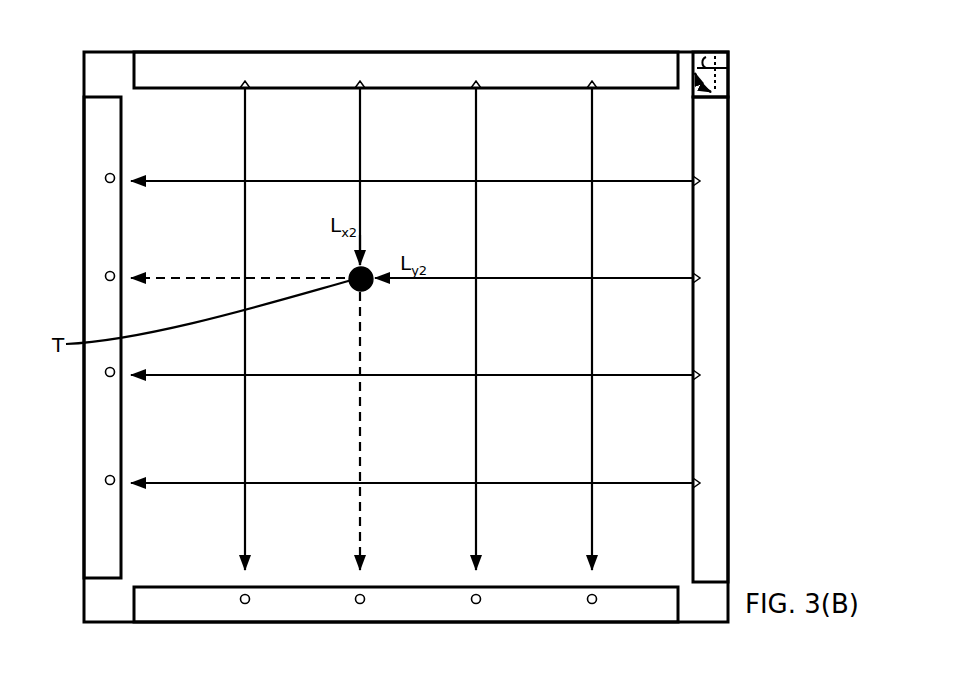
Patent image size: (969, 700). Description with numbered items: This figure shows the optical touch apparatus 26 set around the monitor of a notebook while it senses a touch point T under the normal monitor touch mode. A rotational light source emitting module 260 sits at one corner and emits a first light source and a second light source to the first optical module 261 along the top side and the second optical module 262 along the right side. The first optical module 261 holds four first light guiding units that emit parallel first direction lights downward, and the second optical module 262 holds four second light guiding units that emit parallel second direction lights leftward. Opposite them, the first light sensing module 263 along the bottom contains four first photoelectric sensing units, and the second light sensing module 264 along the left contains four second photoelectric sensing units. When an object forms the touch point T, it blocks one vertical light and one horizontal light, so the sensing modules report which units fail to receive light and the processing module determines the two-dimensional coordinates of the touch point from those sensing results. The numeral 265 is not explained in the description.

The optical touch apparatus 26 is at (526, 33).
The rotational light source emitting module 260 is at (706, 54).
The first optical module 261 is at (400, 60).
The second optical module 262 is at (723, 418).
The first light sensing module 263 is at (278, 610).
The second light sensing module 264 is at (89, 417).
The frame 265 is at (297, 5).